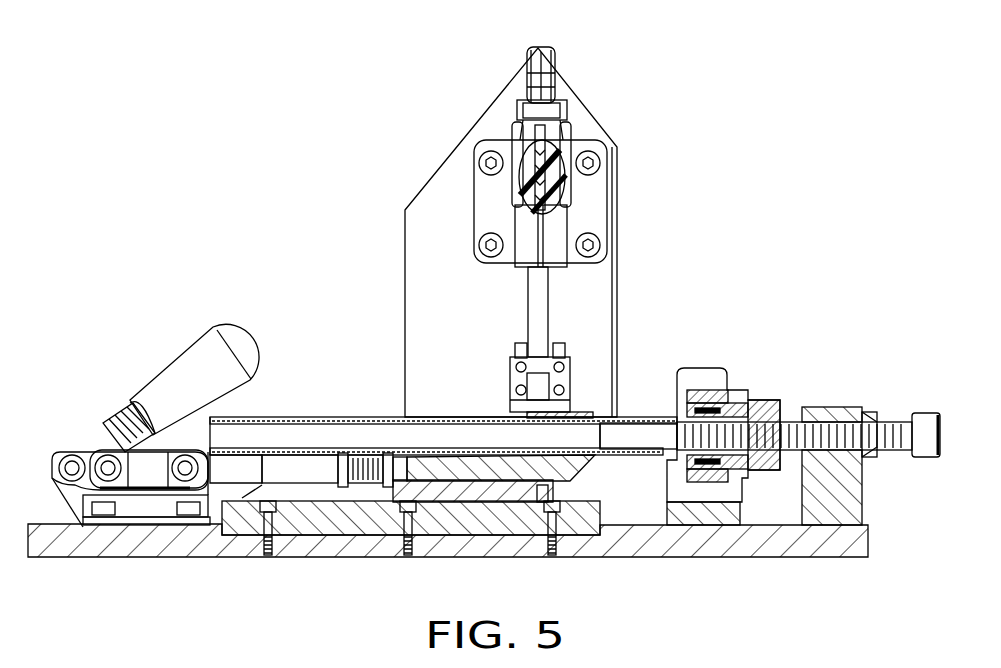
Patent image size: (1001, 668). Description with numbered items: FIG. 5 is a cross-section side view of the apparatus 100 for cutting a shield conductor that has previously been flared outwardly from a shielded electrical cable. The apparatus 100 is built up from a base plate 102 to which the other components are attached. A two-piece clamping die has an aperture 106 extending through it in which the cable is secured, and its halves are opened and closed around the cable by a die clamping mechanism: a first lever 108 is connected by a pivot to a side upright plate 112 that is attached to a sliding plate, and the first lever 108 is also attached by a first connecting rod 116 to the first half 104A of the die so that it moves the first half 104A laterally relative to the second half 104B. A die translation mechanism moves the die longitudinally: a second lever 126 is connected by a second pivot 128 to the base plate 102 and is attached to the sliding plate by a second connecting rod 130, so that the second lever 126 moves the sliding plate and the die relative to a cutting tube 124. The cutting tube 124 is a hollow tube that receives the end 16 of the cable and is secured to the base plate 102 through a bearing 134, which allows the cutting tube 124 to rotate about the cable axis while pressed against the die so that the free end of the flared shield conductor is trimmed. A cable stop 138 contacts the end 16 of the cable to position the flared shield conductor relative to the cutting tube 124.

The apparatus 100 is at (735, 124).
The base plate 102 is at (720, 548).
The first half of the clamping die 104A is at (610, 416).
The second half of the clamping die 104B is at (630, 437).
The aperture 106 is at (458, 432).
The first lever 108 is at (523, 163).
The side upright plate 112 is at (613, 193).
The first connecting rod 116 is at (535, 310).
The cutting tube 124 is at (658, 417).
The second lever 126 is at (197, 363).
The second pivot 128 is at (105, 470).
The second connecting rod 130 is at (315, 477).
The bearing 134 is at (728, 415).
The cable stop 138 is at (690, 438).
The end of the shielded electrical cable 16 is at (588, 458).